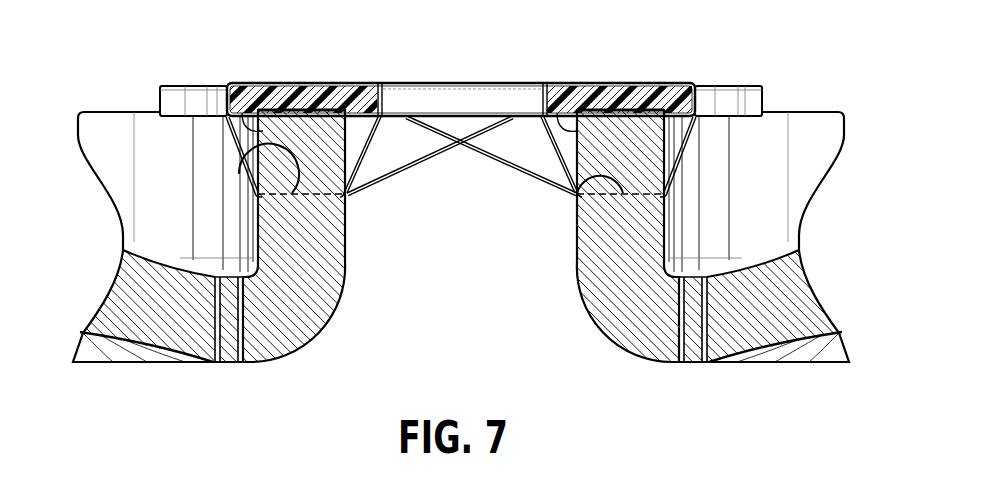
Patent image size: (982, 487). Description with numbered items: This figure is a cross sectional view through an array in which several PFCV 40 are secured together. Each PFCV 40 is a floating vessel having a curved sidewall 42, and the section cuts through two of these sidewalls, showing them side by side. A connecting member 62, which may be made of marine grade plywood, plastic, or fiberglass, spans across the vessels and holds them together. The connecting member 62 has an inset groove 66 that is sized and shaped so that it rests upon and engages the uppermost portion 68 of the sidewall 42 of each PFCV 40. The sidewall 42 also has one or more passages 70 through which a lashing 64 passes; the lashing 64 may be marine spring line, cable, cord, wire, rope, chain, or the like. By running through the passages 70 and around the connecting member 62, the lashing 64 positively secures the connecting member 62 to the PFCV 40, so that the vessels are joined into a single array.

The PFCV 40 is at (119, 108).
The curved sidewall 42 is at (346, 238).
The connecting member 62 is at (751, 84).
The lashing 64 is at (358, 82).
The inset groove 66 is at (242, 113).
The uppermost portion 68 is at (297, 107).
The passage 70 is at (240, 173).